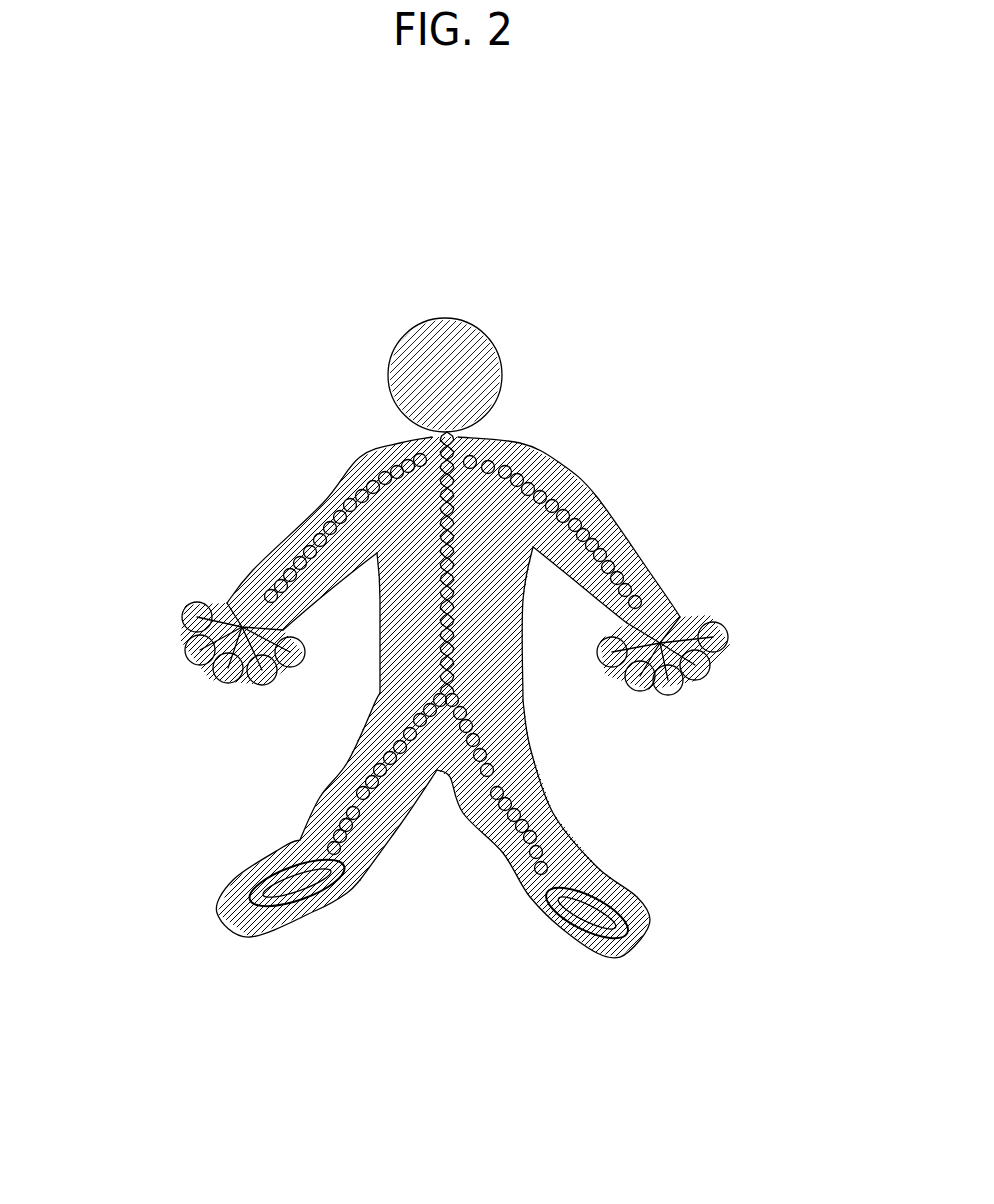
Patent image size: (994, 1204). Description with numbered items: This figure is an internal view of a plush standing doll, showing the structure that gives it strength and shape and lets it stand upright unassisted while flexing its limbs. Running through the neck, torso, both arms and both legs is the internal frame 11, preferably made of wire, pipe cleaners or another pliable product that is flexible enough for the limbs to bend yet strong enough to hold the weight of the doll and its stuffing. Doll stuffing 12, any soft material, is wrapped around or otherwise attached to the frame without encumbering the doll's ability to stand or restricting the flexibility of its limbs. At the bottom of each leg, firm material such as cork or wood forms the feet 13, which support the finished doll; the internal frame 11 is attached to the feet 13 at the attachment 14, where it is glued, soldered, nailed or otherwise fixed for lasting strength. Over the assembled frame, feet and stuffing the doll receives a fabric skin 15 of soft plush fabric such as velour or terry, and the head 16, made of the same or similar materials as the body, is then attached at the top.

The head 16 is at (505, 393).
The internal frame 11 is at (457, 665).
The doll stuffing 12 is at (543, 847).
The feet 13 is at (593, 917).
The attachment of frame to feet 14 is at (347, 877).
The fabric skin 15 is at (300, 813).